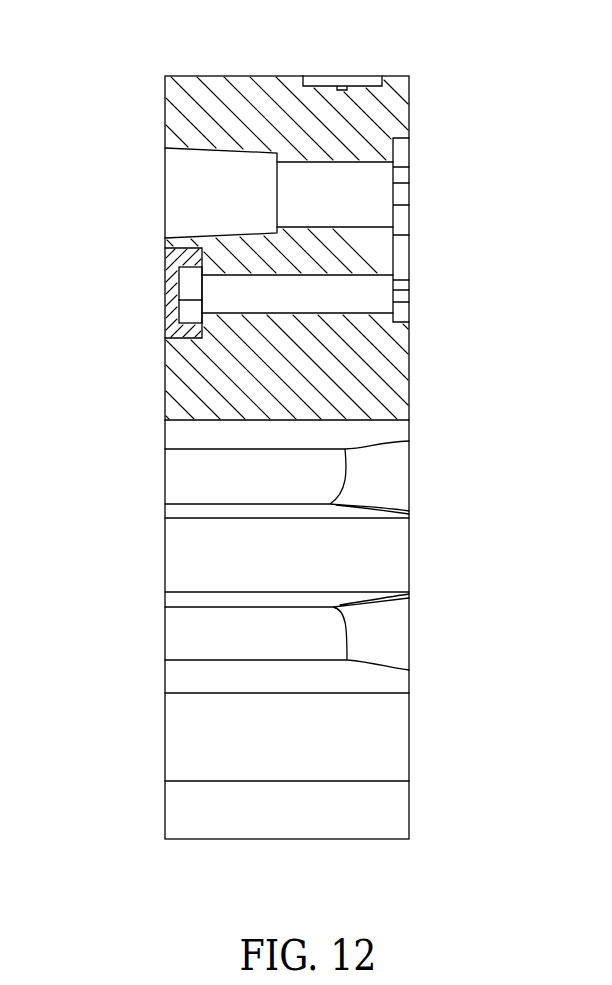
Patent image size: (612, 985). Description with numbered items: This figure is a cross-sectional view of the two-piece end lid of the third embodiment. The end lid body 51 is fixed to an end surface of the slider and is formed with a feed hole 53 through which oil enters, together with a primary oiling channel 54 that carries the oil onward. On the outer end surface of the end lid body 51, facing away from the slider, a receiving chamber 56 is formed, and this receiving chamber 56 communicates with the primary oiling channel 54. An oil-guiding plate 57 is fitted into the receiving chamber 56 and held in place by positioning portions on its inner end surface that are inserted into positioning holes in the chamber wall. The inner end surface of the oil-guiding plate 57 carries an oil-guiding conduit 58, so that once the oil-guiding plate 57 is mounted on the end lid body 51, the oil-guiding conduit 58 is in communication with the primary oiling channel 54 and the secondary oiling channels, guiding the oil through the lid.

The end lid body 51 is at (223, 90).
The feed hole 53 is at (187, 175).
The primary oiling channel 54 is at (329, 298).
The receiving chamber 56 is at (172, 362).
The oil-guiding plate 57 is at (182, 257).
The oil-guiding conduit 58 is at (190, 313).